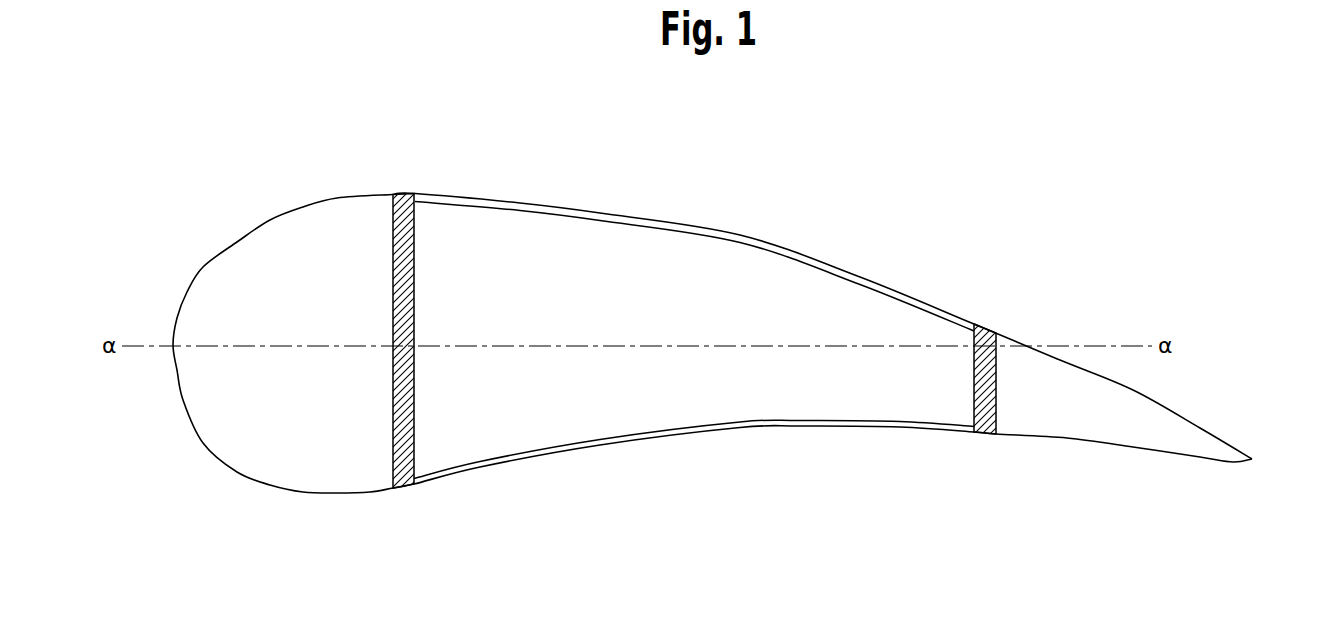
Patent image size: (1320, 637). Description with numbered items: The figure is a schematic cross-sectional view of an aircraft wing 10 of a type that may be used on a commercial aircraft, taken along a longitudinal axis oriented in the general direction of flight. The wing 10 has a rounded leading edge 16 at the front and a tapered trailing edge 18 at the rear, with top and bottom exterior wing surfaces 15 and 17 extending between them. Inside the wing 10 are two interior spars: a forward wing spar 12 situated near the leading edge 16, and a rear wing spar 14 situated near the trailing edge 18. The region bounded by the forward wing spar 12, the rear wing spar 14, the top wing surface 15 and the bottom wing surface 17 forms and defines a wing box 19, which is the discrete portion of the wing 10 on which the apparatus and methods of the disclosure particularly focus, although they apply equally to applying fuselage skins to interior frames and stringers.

The aircraft wing 10 is at (757, 143).
The forward wing spar 12 is at (392, 221).
The rear wing spar 14 is at (998, 378).
The top wing surface 15 is at (757, 243).
The leading edge 16 is at (188, 277).
The bottom wing surface 17 is at (620, 437).
The trailing edge 18 is at (1249, 474).
The wing box 19 is at (613, 200).